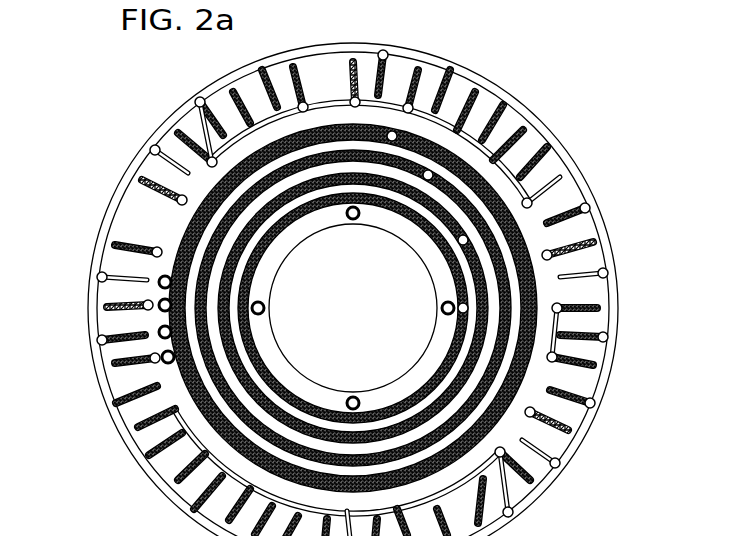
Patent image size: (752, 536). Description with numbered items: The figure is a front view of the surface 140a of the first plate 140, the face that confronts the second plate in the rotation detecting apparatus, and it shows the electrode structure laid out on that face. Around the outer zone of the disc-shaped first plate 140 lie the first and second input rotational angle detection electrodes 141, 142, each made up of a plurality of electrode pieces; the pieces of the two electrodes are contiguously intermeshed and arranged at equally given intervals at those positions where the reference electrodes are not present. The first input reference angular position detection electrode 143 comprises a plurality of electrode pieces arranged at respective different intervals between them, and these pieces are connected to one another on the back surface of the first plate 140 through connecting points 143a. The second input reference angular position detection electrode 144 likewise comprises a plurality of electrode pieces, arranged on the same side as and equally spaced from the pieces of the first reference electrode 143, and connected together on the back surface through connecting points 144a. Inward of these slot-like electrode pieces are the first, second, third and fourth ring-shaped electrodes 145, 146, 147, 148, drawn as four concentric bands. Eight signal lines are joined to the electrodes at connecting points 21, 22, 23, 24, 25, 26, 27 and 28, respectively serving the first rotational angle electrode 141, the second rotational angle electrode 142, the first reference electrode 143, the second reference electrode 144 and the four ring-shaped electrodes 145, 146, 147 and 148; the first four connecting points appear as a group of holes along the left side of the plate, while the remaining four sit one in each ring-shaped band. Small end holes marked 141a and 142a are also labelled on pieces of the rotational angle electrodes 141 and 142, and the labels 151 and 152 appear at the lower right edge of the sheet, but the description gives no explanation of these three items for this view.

The first plate 140 is at (566, 136).
The surface of the first plate 140a is at (512, 128).
The first input rotational angle detection electrode 141 is at (517, 110).
The slot end hole 141a is at (198, 100).
The second input rotational angle detection electrode 142 is at (563, 173).
The bar end hole 142a is at (153, 146).
The first input reference angular position detection electrode 143 is at (590, 270).
The connecting points 143a is at (608, 273).
The second input reference angular position detection electrode 144 is at (592, 240).
The connecting points 144a is at (140, 180).
The first ring-shaped electrode 145 is at (530, 288).
The second ring-shaped electrode 146 is at (507, 347).
The third ring-shaped electrode 147 is at (430, 413).
The fourth ring-shaped electrode 148 is at (273, 378).
The connecting point 21 is at (159, 333).
The connecting point 22 is at (162, 358).
The connecting point 23 is at (158, 282).
The connecting point 24 is at (159, 306).
The connecting point 25 is at (392, 131).
The connecting point 26 is at (426, 179).
The connecting point 27 is at (459, 243).
The connecting point 28 is at (447, 302).
The element of adjacent figure 151 is at (681, 520).
The element of adjacent figure 152 is at (730, 525).